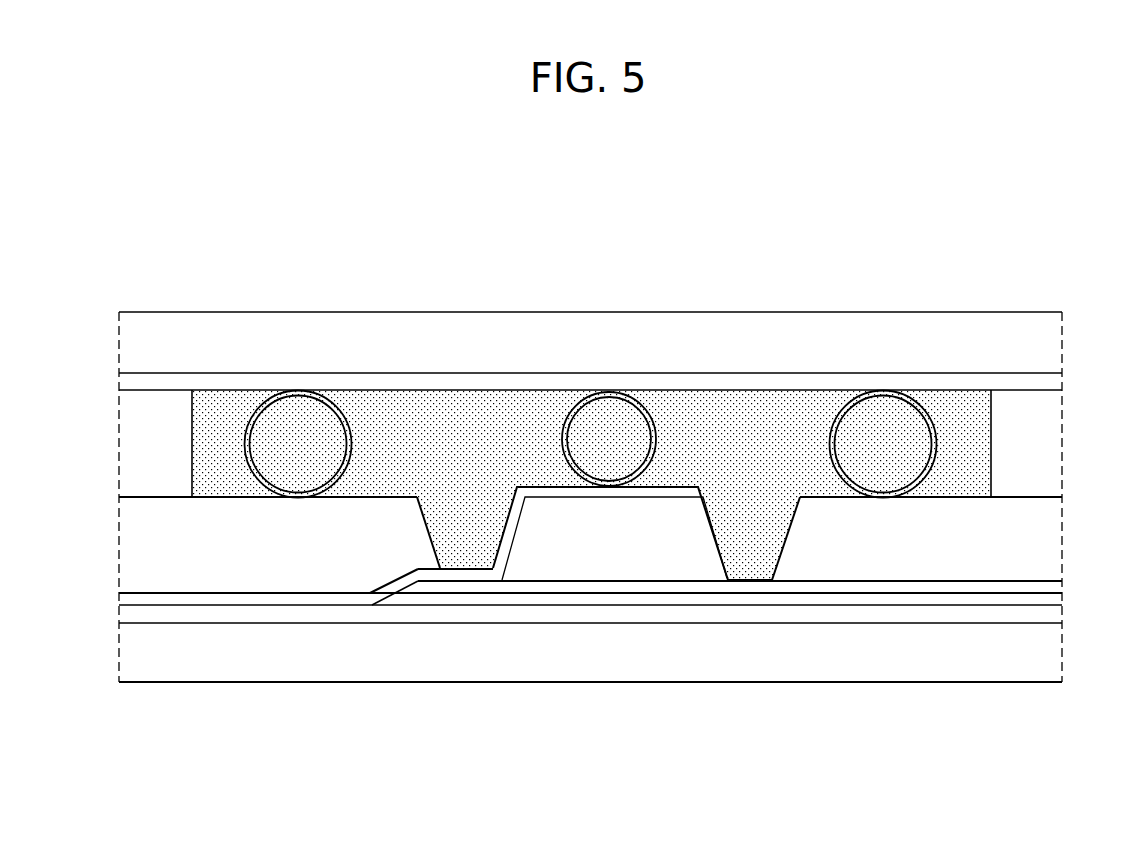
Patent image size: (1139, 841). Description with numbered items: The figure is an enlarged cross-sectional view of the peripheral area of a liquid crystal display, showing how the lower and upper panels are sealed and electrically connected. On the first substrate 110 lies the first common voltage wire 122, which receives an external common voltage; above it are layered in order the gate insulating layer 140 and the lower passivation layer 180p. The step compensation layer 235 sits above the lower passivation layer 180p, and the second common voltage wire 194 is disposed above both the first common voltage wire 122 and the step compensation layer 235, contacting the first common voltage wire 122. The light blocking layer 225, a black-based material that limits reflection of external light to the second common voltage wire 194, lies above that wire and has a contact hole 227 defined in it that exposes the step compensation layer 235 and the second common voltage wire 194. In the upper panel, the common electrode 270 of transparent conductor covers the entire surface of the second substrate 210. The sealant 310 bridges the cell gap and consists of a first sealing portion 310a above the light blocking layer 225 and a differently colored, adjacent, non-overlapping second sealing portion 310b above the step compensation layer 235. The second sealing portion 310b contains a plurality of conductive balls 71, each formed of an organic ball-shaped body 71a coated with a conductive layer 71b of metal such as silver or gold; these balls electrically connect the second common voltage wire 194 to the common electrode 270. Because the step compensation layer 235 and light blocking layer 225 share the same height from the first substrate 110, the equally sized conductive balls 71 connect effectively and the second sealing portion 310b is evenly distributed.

The conductive ball 71 is at (593, 360).
The body 71a is at (295, 427).
The conductive layer 71b is at (250, 410).
The first substrate 110 is at (398, 665).
The first common voltage wire 122 is at (710, 613).
The gate insulating layer 140 is at (807, 598).
The lower passivation layer 180p is at (888, 587).
The second common voltage wire 194 is at (200, 599).
The second substrate 210 is at (508, 328).
The light blocking layer 225 is at (310, 557).
The contact hole 227 is at (433, 542).
The step compensation layer 235 is at (600, 552).
The common electrode 270 is at (748, 382).
The sealant 310 is at (662, 404).
The first sealing portion 310a is at (1045, 437).
The second sealing portion 310b is at (412, 423).